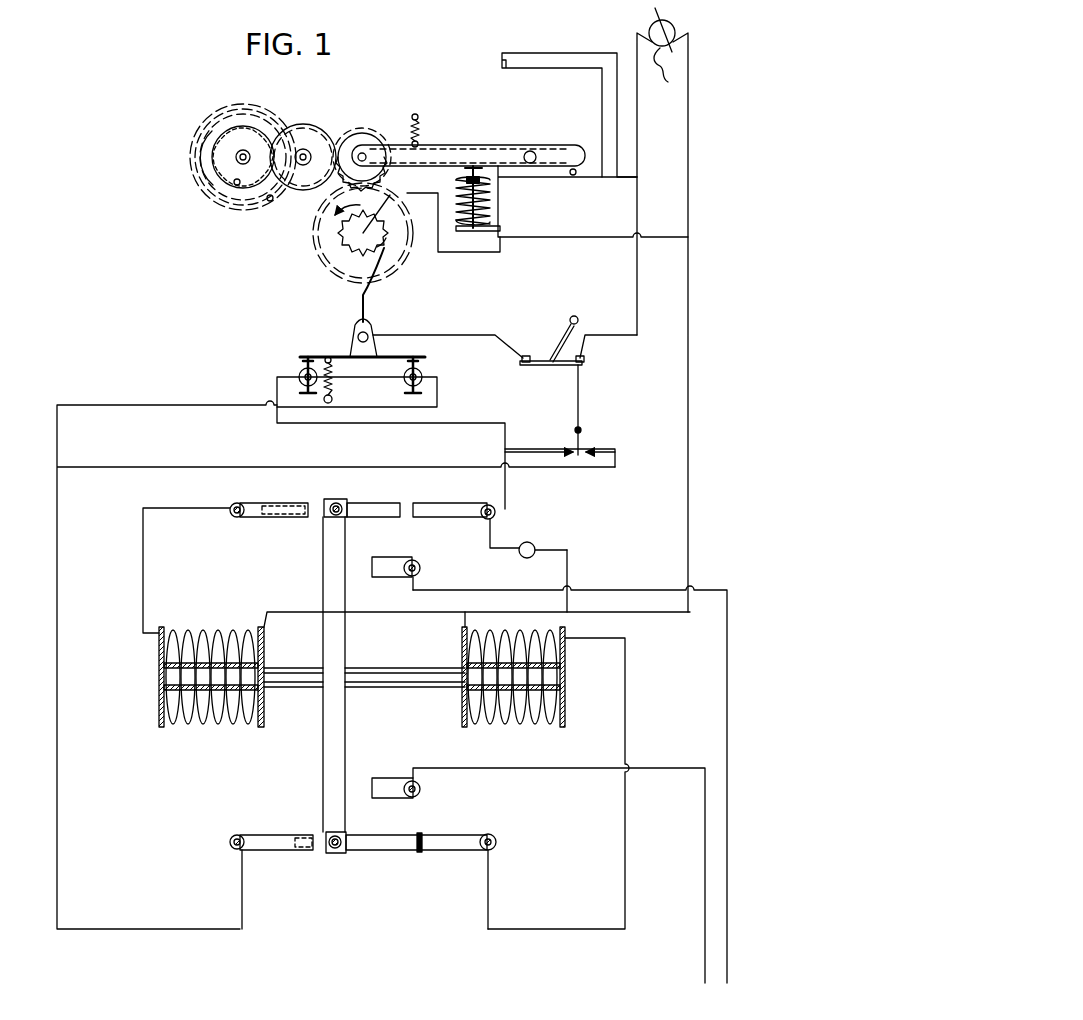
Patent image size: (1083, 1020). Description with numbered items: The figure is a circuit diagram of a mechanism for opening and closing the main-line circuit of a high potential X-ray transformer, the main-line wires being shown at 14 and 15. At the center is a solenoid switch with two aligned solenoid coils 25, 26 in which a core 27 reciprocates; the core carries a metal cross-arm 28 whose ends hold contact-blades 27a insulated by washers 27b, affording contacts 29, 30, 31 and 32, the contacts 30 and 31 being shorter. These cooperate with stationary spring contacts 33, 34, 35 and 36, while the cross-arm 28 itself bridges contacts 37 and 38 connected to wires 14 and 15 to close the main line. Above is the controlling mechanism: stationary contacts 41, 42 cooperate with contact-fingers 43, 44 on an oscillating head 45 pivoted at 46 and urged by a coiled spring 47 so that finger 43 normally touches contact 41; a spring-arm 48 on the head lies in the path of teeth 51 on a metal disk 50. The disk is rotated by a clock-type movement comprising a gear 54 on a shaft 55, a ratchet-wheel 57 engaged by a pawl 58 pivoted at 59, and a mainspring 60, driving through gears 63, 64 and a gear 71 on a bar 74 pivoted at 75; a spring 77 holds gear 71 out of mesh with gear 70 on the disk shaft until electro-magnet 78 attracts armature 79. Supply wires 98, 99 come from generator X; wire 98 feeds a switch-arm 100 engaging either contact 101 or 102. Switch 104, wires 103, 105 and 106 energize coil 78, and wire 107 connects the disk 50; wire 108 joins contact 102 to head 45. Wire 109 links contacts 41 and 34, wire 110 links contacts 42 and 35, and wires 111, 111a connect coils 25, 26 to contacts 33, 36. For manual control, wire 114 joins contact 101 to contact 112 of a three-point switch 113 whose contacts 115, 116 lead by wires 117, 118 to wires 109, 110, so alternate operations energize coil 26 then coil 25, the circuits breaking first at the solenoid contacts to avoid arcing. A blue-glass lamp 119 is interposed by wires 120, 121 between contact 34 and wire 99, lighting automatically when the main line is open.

The main line wire 14 is at (620, 590).
The main line wire 15 is at (668, 770).
The solenoid coil 25 is at (220, 727).
The solenoid coil 26 is at (512, 727).
The solenoid core 27 is at (297, 687).
The contact blade 27a is at (355, 493).
The insulating washer 27b is at (325, 520).
The cross-arm 28 is at (347, 712).
The contact 29 is at (308, 503).
The contact 30 is at (390, 508).
The contact 31 is at (318, 853).
The contact 32 is at (400, 852).
The contact 33 is at (238, 518).
The contact 34 is at (480, 520).
The contact 35 is at (265, 850).
The contact 36 is at (478, 852).
The contact 37 is at (410, 560).
The contact 38 is at (390, 776).
The contact 41 is at (297, 372).
The contact 42 is at (422, 374).
The contact-finger 43 is at (323, 356).
The contact-finger 44 is at (392, 358).
The oscillating head 45 is at (366, 335).
The pivot 46 is at (366, 336).
The coiled spring 47 is at (335, 380).
The spring-arm 48 is at (360, 302).
The metal disk 50 is at (340, 236).
The teeth 51 is at (345, 250).
The gear 54 is at (226, 125).
The shaft 55 is at (246, 150).
The ratchet-wheel 57 is at (238, 162).
The pawl 58 is at (240, 186).
The pawl pivot 59 is at (236, 185).
The spring 60 is at (208, 148).
The gear 63 is at (306, 150).
The gear 64 is at (345, 135).
The gear 70 is at (332, 265).
The gear 71 is at (372, 145).
The bar 74 is at (458, 148).
The pivot 75 is at (532, 150).
The spring 77 is at (422, 130).
The electro-magnet 78 is at (492, 205).
The armature 79 is at (475, 165).
The wire 98 is at (640, 112).
The wire 99 is at (690, 116).
The switch-arm 100 is at (556, 332).
The contact 101 is at (585, 358).
The contact 102 is at (520, 360).
The wire 103 is at (601, 108).
The switch 104 is at (500, 60).
The wire 105 is at (540, 52).
The wire 106 is at (572, 236).
The wire 107 is at (475, 255).
The wire 108 is at (443, 334).
The wire 109 is at (468, 420).
The wire 110 is at (180, 405).
The wire 111 is at (145, 580).
The wire 111a is at (626, 734).
The contact 112 is at (582, 458).
The three-point switch 113 is at (584, 450).
The wire 114 is at (582, 408).
The contact 115 is at (574, 443).
The contact 116 is at (618, 445).
The wire 117 is at (520, 450).
The wire 118 is at (552, 470).
The blue-glass incandescent lamp 119 is at (538, 548).
The wire 120 is at (518, 545).
The wire 121 is at (569, 567).